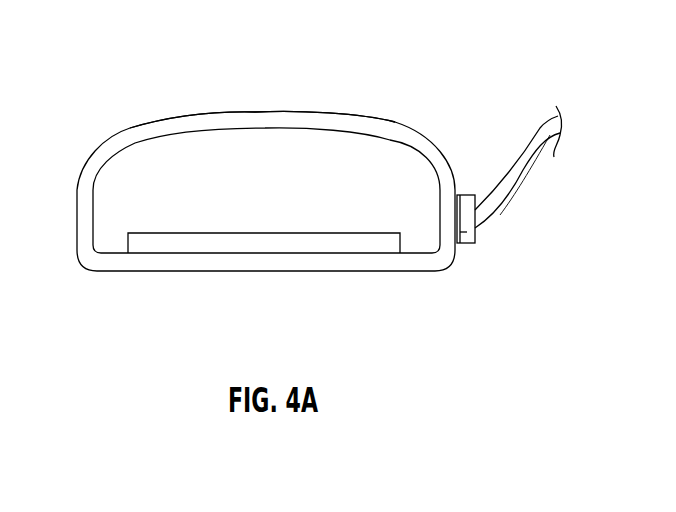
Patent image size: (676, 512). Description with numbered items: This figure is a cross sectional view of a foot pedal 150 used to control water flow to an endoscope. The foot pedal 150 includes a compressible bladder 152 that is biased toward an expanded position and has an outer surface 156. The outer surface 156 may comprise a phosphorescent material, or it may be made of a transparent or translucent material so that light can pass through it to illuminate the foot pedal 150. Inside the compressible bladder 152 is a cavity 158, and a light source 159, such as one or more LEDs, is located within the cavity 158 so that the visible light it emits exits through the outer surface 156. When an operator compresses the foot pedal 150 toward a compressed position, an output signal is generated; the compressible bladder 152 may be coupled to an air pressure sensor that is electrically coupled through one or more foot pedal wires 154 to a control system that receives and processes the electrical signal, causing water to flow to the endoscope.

The foot pedal 150 is at (106, 119).
The compressible bladder 152 is at (112, 272).
The foot pedal wires 154 is at (510, 190).
The outer surface 156 is at (252, 111).
The cavity 158 is at (265, 200).
The light source 159 is at (183, 243).